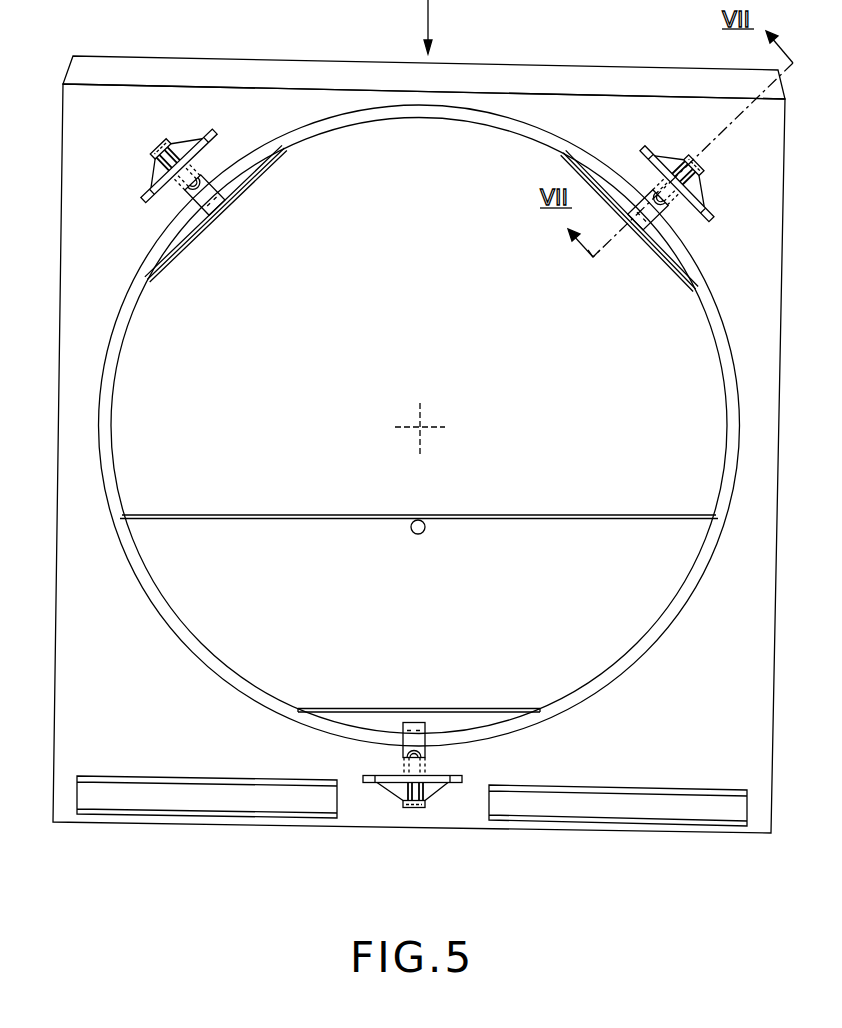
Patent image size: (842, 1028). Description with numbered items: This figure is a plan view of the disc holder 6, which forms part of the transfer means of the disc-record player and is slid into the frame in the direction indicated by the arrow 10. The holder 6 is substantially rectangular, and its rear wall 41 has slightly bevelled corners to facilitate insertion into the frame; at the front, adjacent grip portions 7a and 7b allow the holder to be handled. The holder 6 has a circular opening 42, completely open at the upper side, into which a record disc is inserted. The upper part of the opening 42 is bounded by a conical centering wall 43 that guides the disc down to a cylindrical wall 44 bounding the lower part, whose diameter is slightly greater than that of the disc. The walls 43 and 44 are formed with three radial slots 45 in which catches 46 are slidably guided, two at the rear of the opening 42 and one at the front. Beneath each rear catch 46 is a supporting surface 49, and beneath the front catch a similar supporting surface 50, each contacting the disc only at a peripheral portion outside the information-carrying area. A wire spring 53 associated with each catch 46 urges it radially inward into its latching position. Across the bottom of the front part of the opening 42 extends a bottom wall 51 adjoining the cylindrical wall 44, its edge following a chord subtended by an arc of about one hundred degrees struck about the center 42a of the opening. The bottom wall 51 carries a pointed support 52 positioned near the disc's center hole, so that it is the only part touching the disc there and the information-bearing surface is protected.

The arrow 10 is at (430, 17).
The rear wall 41 is at (538, 63).
The circular opening 42 is at (435, 425).
The center of the opening 42a is at (422, 427).
The conical centering wall 43 is at (730, 487).
The cylindrical wall 44 is at (680, 595).
The radial slot 45 is at (215, 178).
The catch 46 is at (183, 213).
The supporting surface 49 is at (240, 192).
The supporting surface 50 is at (357, 722).
The bottom wall 51 is at (256, 537).
The pointed support 52 is at (424, 533).
The wire spring 53 is at (187, 150).
The disc holder 6 is at (502, 845).
The grip portion 7a is at (183, 805).
The grip portion 7b is at (612, 810).